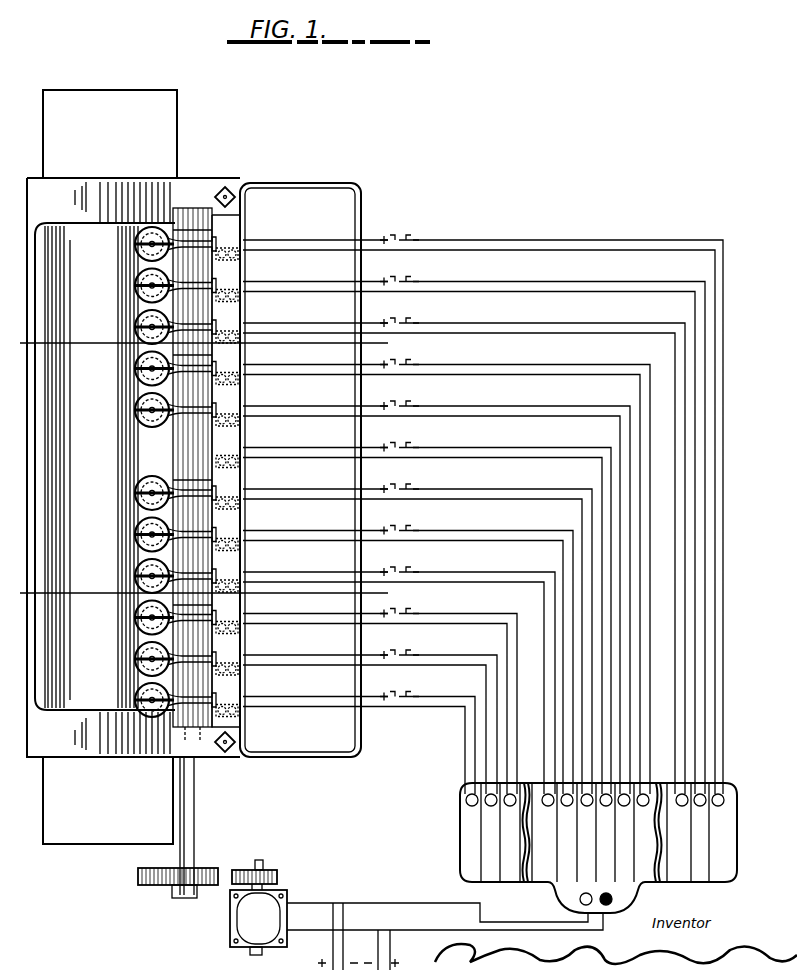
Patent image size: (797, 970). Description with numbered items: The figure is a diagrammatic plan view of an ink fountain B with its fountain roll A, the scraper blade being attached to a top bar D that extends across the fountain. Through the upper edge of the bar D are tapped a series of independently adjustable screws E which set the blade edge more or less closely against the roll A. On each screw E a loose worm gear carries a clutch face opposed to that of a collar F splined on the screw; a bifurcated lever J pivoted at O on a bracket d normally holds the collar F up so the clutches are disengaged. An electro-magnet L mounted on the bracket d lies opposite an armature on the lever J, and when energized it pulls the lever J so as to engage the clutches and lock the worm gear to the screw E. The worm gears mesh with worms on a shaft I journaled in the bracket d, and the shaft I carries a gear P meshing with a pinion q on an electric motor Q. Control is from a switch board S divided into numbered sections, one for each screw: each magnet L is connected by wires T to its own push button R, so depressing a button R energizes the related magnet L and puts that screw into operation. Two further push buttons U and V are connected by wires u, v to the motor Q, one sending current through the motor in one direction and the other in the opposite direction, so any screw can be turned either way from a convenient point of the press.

The fountain roll A is at (105, 466).
The ink fountain B is at (318, 183).
The top bar D is at (212, 752).
The screws E is at (137, 438).
The collar F is at (137, 384).
The bifurcated lever J is at (214, 376).
The pivot O is at (216, 428).
The bracket d is at (215, 466).
The shaft I is at (216, 510).
The electro-magnet L is at (240, 545).
The wires T is at (497, 281).
The switch board S is at (462, 855).
The push button R is at (510, 806).
The push button U is at (579, 903).
The push button V is at (613, 902).
The wire u is at (416, 908).
The wire v is at (436, 935).
The gear P is at (140, 880).
The pinion q is at (278, 872).
The electric motor Q is at (240, 928).